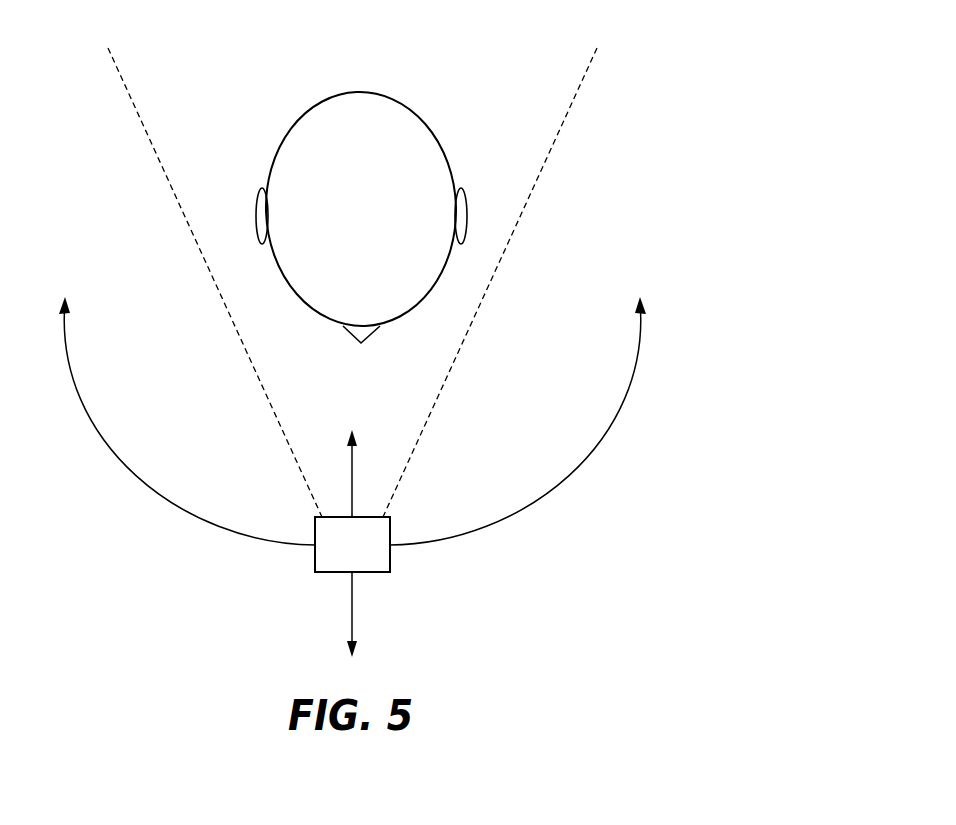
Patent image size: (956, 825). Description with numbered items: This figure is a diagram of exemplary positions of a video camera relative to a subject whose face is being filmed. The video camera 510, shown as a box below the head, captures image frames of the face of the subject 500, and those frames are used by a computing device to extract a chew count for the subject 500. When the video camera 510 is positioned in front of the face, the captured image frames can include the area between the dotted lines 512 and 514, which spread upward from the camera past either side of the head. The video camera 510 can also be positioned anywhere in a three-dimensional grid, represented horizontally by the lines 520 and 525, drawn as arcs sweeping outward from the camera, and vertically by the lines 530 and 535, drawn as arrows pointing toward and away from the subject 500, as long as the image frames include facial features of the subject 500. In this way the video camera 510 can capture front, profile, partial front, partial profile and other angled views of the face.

The subject 500 is at (413, 110).
The video camera 510 is at (390, 562).
The dotted line 512 is at (507, 252).
The dotted line 514 is at (200, 250).
The line 520 is at (160, 496).
The line 525 is at (545, 496).
The line 530 is at (353, 473).
The line 535 is at (353, 602).